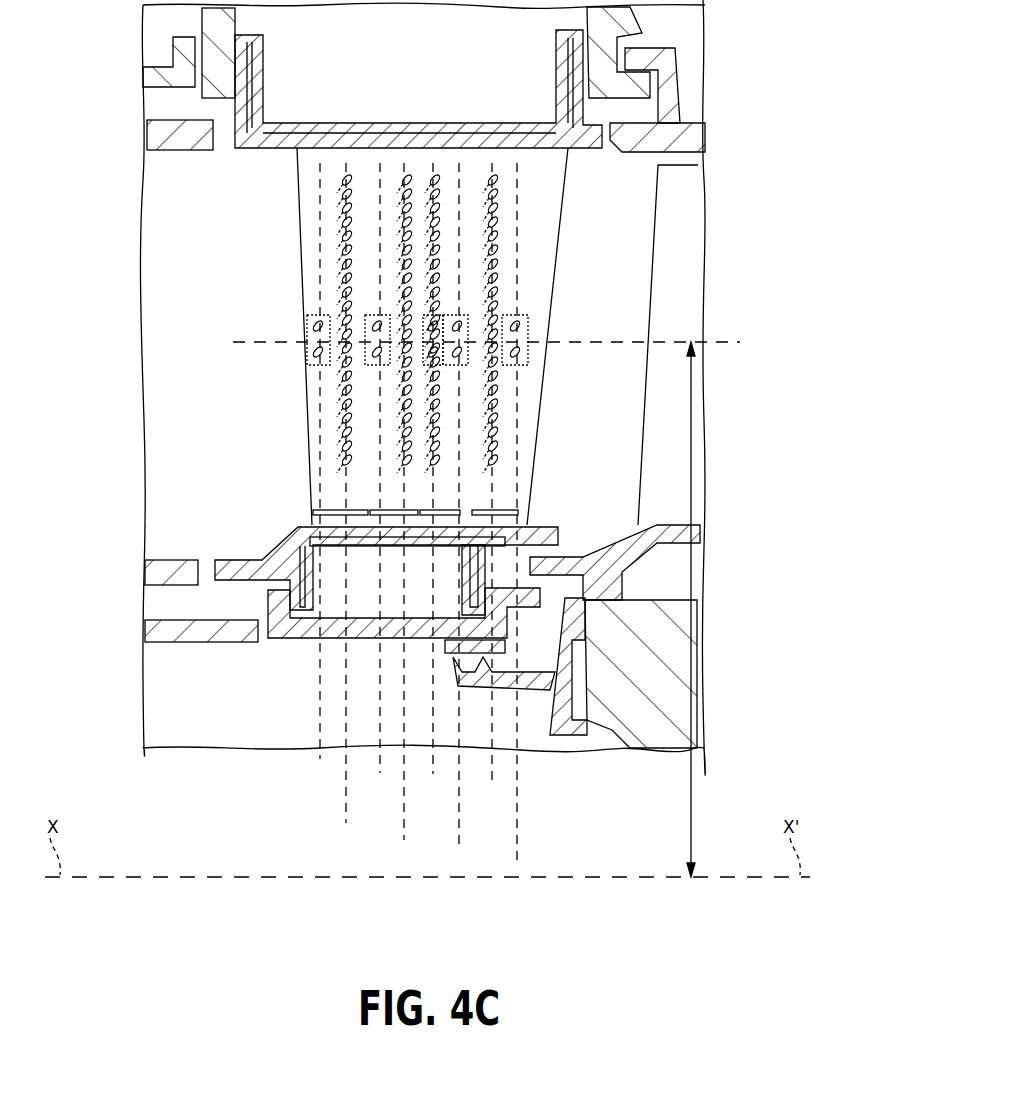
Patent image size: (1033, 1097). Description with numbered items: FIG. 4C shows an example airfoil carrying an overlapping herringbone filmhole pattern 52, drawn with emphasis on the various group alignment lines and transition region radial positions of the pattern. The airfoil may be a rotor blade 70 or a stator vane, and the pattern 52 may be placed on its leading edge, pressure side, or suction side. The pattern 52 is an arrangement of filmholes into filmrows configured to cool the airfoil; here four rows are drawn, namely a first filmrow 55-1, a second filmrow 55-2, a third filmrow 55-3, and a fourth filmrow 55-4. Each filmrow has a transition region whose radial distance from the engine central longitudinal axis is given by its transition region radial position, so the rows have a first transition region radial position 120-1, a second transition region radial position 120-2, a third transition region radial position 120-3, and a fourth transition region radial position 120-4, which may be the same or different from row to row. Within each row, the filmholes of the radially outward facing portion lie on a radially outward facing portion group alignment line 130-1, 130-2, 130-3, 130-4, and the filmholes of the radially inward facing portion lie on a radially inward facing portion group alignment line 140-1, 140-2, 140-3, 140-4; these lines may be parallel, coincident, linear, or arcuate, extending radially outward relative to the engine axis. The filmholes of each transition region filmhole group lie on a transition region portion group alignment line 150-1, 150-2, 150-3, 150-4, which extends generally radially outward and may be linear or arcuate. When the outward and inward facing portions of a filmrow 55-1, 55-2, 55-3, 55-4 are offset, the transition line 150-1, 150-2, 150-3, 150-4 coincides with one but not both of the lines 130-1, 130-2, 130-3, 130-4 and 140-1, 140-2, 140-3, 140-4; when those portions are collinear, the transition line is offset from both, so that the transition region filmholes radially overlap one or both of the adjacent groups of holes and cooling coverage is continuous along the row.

The overlapping herringbone filmhole pattern 52 is at (183, 393).
The rotor blade 70 is at (660, 232).
The first filmrow 55-1 is at (316, 525).
The second filmrow 55-2 is at (380, 513).
The third filmrow 55-3 is at (457, 513).
The fourth filmrow 55-4 is at (492, 516).
The first transition region radial position 120-1 is at (740, 342).
The second transition region radial position 120-2 is at (433, 340).
The third transition region radial position 120-3 is at (455, 340).
The fourth transition region radial position 120-4 is at (515, 340).
The radially outward facing portion group alignment line 130-1 is at (346, 823).
The radially outward facing portion group alignment line 130-2 is at (404, 840).
The radially outward facing portion group alignment line 130-3 is at (433, 774).
The radially outward facing portion group alignment line 130-4 is at (492, 782).
The radially inward facing portion group alignment line 140-1 is at (247, 508).
The radially inward facing portion group alignment line 140-2 is at (276, 517).
The radially inward facing portion group alignment line 140-3 is at (275, 492).
The radially inward facing portion group alignment line 140-4 is at (305, 500).
The transition region portion group alignment line 150-1 is at (320, 759).
The transition region portion group alignment line 150-2 is at (380, 773).
The transition region portion group alignment line 150-3 is at (459, 847).
The transition region portion group alignment line 150-4 is at (517, 864).